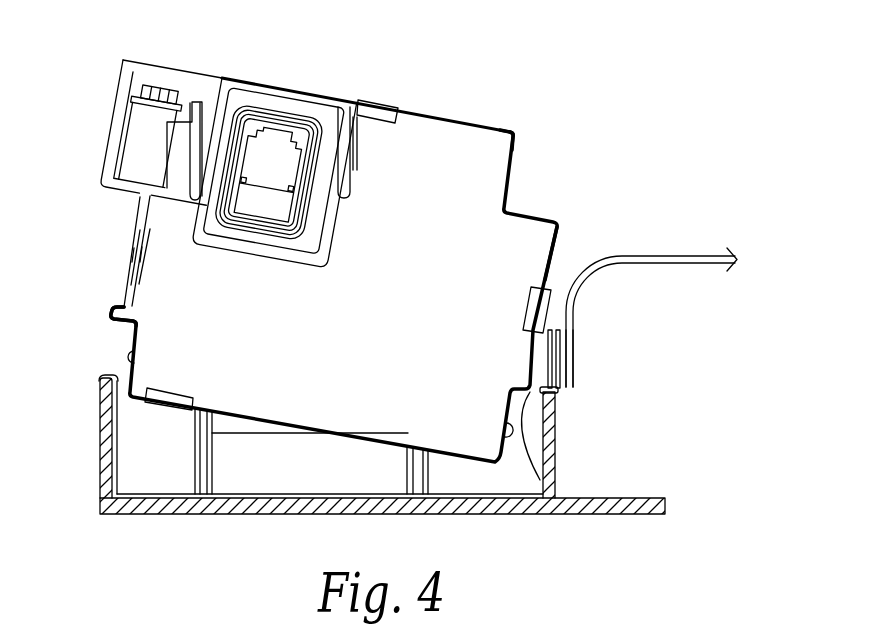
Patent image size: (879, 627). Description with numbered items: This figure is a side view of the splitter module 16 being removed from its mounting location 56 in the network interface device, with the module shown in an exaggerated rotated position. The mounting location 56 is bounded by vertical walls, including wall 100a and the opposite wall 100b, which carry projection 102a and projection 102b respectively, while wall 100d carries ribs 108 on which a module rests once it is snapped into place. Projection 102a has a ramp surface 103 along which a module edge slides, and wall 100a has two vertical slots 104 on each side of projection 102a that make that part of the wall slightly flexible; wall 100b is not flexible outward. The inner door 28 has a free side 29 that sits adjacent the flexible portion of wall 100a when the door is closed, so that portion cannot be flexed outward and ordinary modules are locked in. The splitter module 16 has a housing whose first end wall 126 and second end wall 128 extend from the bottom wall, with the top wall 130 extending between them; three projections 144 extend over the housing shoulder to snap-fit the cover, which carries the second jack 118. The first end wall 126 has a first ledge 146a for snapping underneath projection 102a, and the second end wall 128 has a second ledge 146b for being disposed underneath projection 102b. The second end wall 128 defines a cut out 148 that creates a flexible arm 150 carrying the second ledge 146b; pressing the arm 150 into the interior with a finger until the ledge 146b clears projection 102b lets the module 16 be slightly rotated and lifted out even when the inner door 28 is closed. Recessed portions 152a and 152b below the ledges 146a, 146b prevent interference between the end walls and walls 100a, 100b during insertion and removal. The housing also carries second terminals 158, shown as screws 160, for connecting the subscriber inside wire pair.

The splitter module 16 is at (470, 121).
The inner door 28 is at (675, 256).
The free side 29 is at (560, 338).
The mounting location 56 is at (134, 480).
The wall 100a is at (556, 430).
The wall 100b is at (103, 455).
The wall 100d is at (497, 473).
The projection 102a is at (547, 391).
The projection 102b is at (106, 378).
The ramp surface 103 is at (545, 357).
The vertical slots 104 is at (538, 374).
The ribs 108 is at (200, 498).
The second jack 118 is at (288, 161).
The first end wall 126 is at (558, 243).
The second end wall 128 is at (133, 204).
The top wall 130 is at (516, 128).
The projections 144 is at (383, 105).
The first ledge 146a is at (548, 467).
The second ledge 146b is at (112, 315).
The cut out 148 is at (134, 250).
The flexible arm 150 is at (134, 277).
The recessed portion 152a is at (509, 430).
The recessed portion 152b is at (137, 352).
The second terminals 158 is at (134, 115).
The screws 160 is at (171, 91).